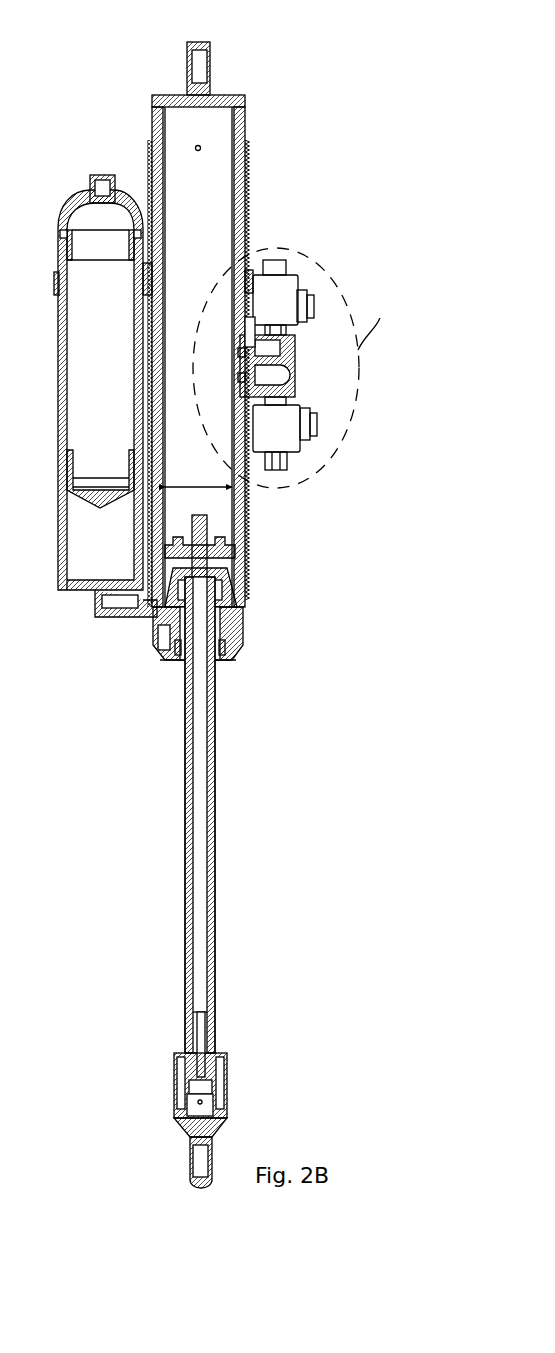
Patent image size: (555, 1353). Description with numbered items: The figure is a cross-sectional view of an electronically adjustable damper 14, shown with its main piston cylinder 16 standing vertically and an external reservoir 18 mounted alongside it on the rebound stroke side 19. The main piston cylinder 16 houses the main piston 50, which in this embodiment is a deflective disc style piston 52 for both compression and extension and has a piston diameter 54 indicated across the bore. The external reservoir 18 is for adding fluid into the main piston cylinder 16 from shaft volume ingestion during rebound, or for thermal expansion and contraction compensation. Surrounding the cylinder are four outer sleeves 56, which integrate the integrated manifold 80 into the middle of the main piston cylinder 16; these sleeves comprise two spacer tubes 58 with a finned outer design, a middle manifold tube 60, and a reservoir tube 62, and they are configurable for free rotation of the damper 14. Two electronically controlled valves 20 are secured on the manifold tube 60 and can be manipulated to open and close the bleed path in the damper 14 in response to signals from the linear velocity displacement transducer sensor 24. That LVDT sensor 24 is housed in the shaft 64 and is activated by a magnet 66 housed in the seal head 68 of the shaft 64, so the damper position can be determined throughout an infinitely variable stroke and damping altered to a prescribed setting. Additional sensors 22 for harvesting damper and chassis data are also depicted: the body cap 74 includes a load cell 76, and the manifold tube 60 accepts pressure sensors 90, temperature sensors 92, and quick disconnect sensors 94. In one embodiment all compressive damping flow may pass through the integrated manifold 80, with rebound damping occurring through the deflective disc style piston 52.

The electronically adjustable damper 14 is at (240, 599).
The main piston cylinder 16 is at (230, 309).
The external reservoir 18 is at (58, 387).
The rebound stroke side 19 is at (235, 624).
The electronically controlled valve 20 is at (282, 283).
The additional sensors 22 is at (177, 650).
The linear velocity displacement transducer sensor 24 is at (195, 659).
The main piston 50 is at (256, 556).
The deflective disc style piston 52 is at (237, 550).
The piston diameter 54 is at (192, 487).
The outer sleeves 56 is at (272, 70).
The spacer tubes 58 is at (249, 152).
The manifold tube 60 is at (250, 311).
The reservoir tube 62 is at (163, 180).
The shaft 64 is at (200, 927).
The magnet 66 is at (200, 593).
The seal head 68 is at (156, 637).
The body cap 74 is at (232, 671).
The load cell 76 is at (263, 350).
The integrated manifold 80 is at (331, 352).
The pressure sensors 90 is at (361, 365).
The temperature sensors 92 is at (361, 365).
The quick disconnect sensors 94 is at (324, 319).